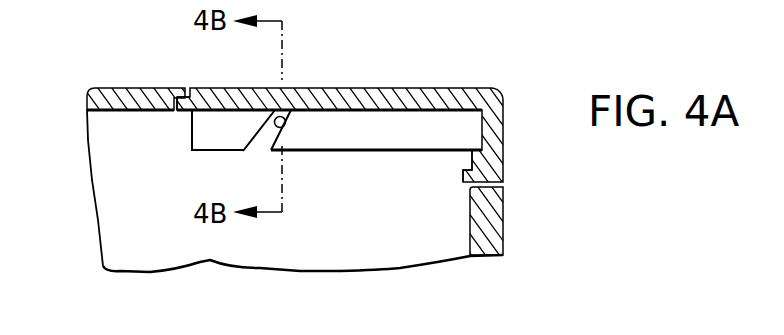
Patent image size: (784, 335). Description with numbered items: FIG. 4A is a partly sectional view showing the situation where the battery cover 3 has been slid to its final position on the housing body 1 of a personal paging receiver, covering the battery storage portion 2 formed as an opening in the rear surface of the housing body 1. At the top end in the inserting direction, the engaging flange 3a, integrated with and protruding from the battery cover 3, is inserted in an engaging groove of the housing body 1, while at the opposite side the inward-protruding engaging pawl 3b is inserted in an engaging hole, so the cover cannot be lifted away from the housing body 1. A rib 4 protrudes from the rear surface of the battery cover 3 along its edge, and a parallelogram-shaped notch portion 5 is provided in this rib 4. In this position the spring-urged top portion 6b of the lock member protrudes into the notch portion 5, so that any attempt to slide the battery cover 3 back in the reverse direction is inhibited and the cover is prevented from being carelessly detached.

The housing body 1 is at (127, 97).
The battery storage portion 2 is at (421, 247).
The battery cover 3 is at (405, 92).
The engaging flange 3a is at (183, 112).
The engaging pawl 3b is at (503, 166).
The rib 4 is at (338, 135).
The notch portion 5 is at (266, 143).
The top portion of lock member 6b is at (287, 117).